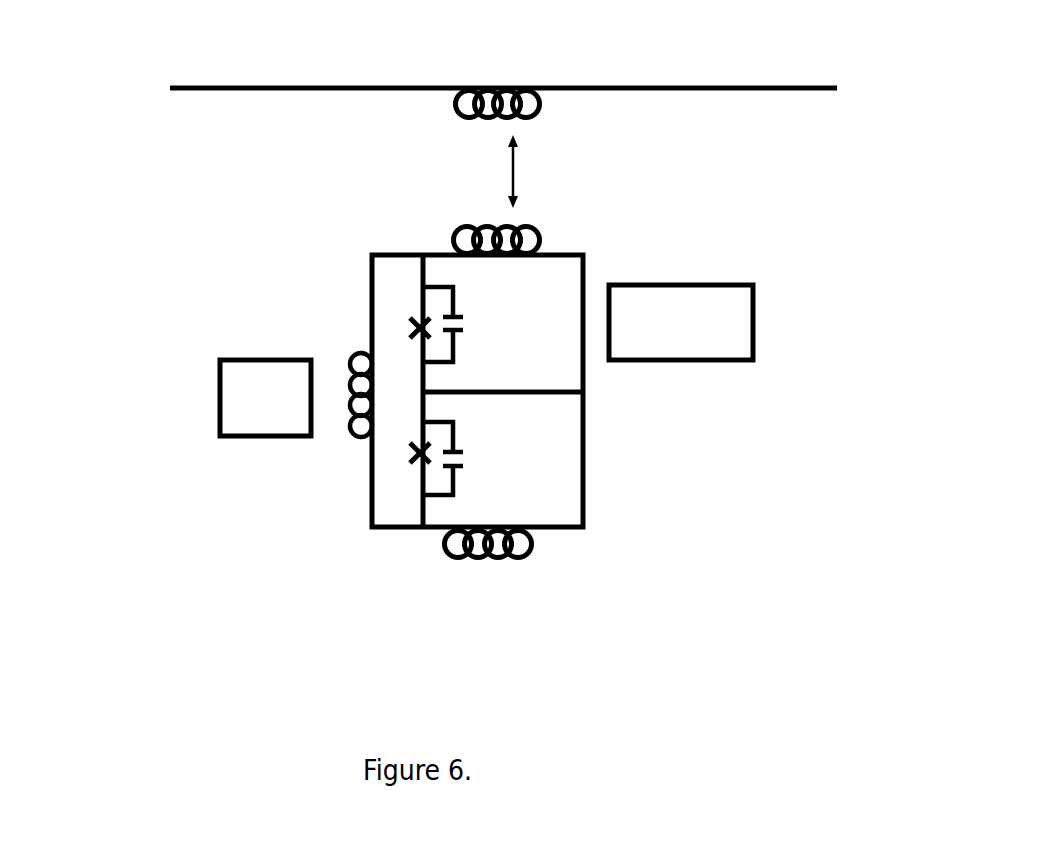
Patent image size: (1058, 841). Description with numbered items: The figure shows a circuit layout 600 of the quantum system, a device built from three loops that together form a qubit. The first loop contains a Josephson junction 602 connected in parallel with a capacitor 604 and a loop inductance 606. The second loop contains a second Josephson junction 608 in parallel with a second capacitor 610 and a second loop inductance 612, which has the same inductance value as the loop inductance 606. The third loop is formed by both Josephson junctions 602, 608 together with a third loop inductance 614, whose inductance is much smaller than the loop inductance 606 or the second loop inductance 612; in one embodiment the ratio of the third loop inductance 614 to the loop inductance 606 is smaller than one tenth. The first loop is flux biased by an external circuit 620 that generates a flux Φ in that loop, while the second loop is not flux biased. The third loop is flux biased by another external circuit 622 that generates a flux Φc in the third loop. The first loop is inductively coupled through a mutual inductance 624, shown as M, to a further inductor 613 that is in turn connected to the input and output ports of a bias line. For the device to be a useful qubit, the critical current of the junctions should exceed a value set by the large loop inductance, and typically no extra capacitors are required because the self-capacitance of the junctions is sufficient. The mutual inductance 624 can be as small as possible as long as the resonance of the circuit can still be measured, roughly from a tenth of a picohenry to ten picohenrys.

The circuit layout 600 is at (771, 726).
The Josephson junction 602 is at (402, 328).
The capacitor 604 is at (437, 298).
The loop inductance 606 is at (530, 200).
The second Josephson junction 608 is at (413, 452).
The second capacitor 610 is at (450, 482).
The second loop inductance 612 is at (535, 575).
The transmission line inductor 613 is at (545, 63).
The third loop inductance 614 is at (340, 358).
The external circuit 620 is at (681, 322).
The external circuit 622 is at (265, 398).
The mutual inductance 624 is at (453, 175).